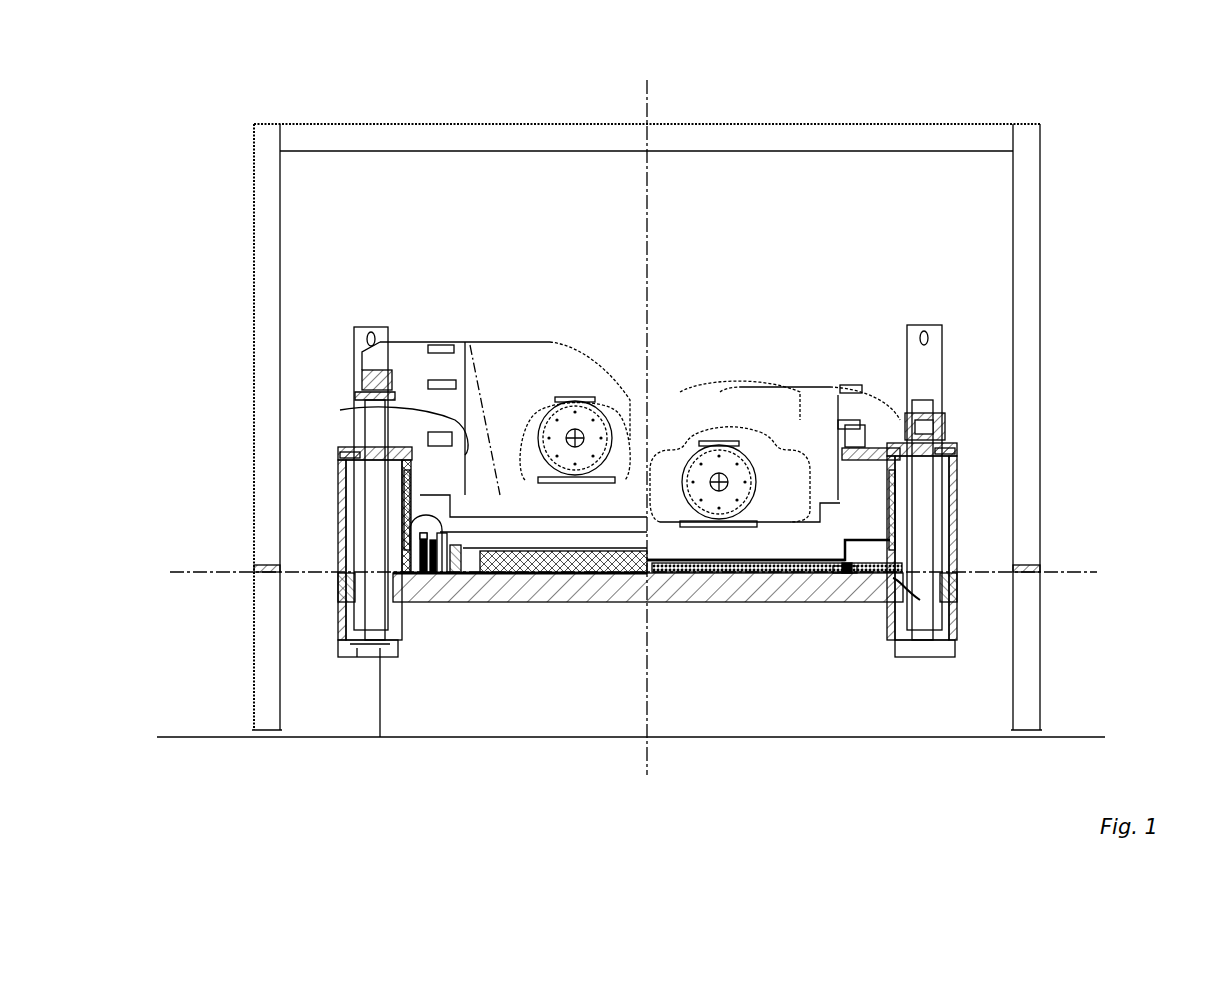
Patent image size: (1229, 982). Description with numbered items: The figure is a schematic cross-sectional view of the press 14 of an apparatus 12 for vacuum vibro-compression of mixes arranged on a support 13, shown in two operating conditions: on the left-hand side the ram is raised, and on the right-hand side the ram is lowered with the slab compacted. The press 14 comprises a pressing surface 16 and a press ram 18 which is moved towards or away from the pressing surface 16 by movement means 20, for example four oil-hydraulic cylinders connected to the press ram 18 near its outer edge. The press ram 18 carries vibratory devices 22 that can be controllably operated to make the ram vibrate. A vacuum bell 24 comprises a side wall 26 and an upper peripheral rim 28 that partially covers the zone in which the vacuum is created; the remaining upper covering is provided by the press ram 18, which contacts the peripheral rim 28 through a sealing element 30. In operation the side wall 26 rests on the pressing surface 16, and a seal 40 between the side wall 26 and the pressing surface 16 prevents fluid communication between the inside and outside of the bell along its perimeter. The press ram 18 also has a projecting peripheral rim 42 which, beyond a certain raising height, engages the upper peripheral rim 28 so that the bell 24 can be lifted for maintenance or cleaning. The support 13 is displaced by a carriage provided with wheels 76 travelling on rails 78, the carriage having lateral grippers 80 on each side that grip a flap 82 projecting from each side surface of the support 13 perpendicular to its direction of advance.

The apparatus 12 is at (1072, 205).
The support 13 is at (720, 557).
The press 14 is at (820, 383).
The pressing surface 16 is at (750, 588).
The press ram 18 is at (515, 500).
The movement means 20 is at (348, 377).
The vibratory devices 22 is at (553, 392).
The vacuum bell 24 is at (370, 488).
The side wall 26 is at (370, 550).
The upper peripheral rim 28 is at (345, 455).
The sealing element 30 is at (370, 412).
The seal 40 is at (893, 578).
The projecting peripheral rim 42 is at (370, 517).
The wheels 76 is at (420, 548).
The rails 78 is at (443, 573).
The lateral grippers 80 is at (463, 553).
The flap 82 is at (837, 577).